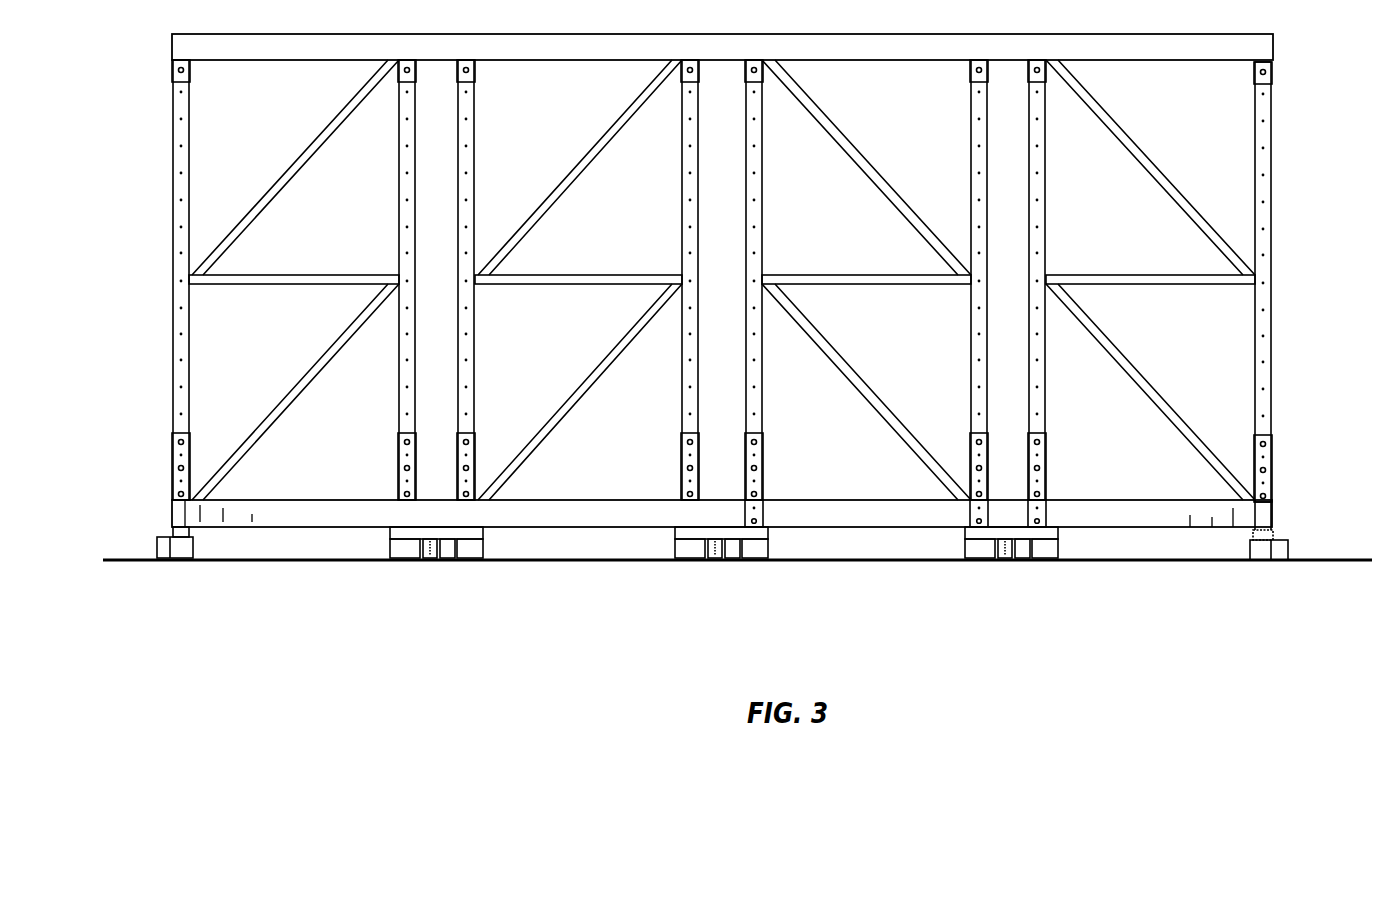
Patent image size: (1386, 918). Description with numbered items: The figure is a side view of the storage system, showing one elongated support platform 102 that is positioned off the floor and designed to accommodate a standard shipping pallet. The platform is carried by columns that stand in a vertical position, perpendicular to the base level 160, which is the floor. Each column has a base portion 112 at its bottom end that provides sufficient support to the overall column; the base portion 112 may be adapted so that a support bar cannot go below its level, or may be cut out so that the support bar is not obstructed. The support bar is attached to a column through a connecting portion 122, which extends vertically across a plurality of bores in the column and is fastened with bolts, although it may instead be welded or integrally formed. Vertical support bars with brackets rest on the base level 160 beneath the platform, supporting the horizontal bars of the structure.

The support platform 102 is at (1147, 554).
The base portion 112 is at (1268, 553).
The connecting portion 122 is at (1272, 463).
The base level 160 is at (1315, 558).